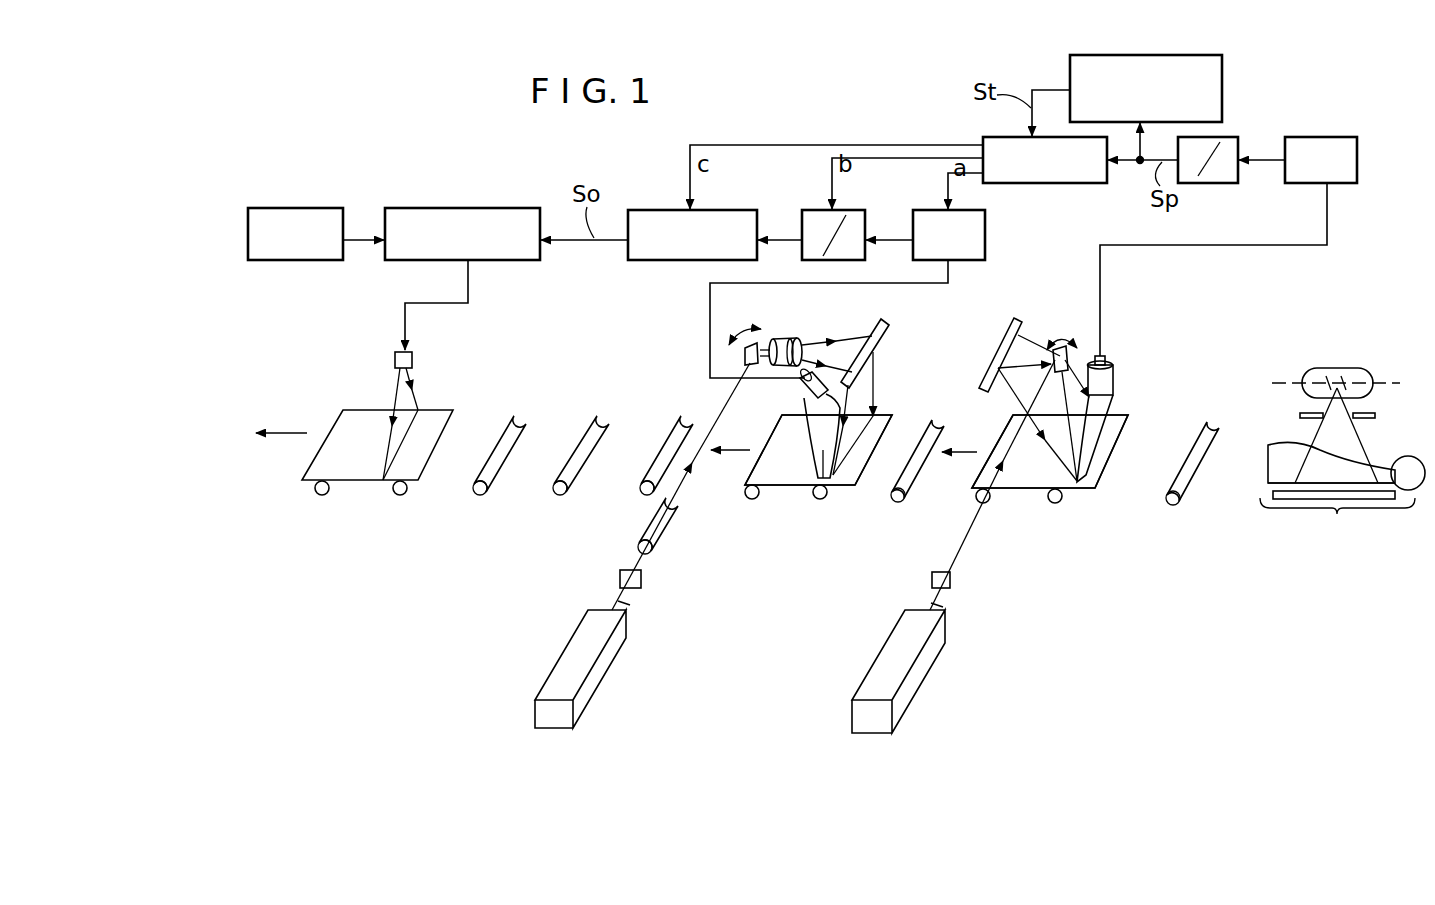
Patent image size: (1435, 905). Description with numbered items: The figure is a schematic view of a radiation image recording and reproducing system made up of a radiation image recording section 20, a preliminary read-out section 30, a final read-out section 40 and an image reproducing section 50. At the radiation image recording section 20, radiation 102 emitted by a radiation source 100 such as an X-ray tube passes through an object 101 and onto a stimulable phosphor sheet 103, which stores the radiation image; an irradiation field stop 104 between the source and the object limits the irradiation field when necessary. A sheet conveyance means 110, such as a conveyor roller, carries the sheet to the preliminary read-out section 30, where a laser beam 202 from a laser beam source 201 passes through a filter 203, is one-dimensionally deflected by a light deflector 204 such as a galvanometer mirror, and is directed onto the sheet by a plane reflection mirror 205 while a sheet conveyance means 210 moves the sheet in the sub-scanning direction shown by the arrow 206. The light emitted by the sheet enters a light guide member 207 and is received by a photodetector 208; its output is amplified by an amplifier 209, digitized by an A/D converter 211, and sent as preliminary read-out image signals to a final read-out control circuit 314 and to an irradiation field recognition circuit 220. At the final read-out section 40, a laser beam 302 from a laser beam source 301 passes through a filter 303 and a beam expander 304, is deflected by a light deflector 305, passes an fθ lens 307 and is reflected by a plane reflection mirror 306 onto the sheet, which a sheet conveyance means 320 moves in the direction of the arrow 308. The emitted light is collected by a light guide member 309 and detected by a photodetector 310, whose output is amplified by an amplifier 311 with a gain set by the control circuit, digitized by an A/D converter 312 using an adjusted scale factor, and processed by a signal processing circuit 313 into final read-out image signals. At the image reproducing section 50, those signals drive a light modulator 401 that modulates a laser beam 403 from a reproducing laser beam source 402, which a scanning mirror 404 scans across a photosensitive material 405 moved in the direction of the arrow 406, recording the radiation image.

The radiation image recording section 20 is at (1337, 524).
The preliminary read-out section 30 is at (1090, 498).
The final read-out section 40 is at (908, 498).
The image reproducing section 50 is at (418, 496).
The radiation source 100 is at (1345, 368).
The object 101 is at (1360, 458).
The radiation 102 is at (1312, 432).
The stimulable phosphor sheet 103 is at (880, 432).
The irradiation field stop 104 is at (1368, 414).
The sheet conveyance means 110 is at (1174, 506).
The laser beam source 201 is at (916, 675).
The laser beam 202 is at (937, 600).
The filter 203 is at (950, 582).
The light deflector 204 is at (1069, 360).
The plane reflection mirror 205 is at (1016, 316).
The arrow 206 is at (968, 452).
The light guide member 207 is at (1103, 420).
The photodetector 208 is at (1113, 380).
The amplifier 209 is at (1318, 135).
The sheet conveyance means 210 is at (1060, 503).
The A/D converter 211 is at (1221, 185).
The irradiation field recognition circuit 220 is at (1222, 96).
The laser beam source 301 is at (605, 664).
The laser beam 302 is at (624, 597).
The filter 303 is at (641, 578).
The beam expander 304 is at (660, 527).
The light deflector 305 is at (765, 343).
The plane reflection mirror 306 is at (886, 330).
The fθ lens 307 is at (801, 338).
The arrow 308 is at (749, 450).
The light guide member 309 is at (850, 410).
The photodetector 310 is at (801, 395).
The amplifier 311 is at (917, 208).
The A/D converter 312 is at (810, 208).
The signal processing circuit 313 is at (641, 208).
The final read-out control circuit 314 is at (1082, 184).
The sheet conveyance means 320 is at (828, 497).
The light modulator 401 is at (500, 207).
The reproducing laser beam source 402 is at (331, 207).
The laser beam 403 is at (358, 246).
The scanning mirror 404 is at (413, 362).
The photosensitive material 405 is at (362, 420).
The arrow 406 is at (298, 432).